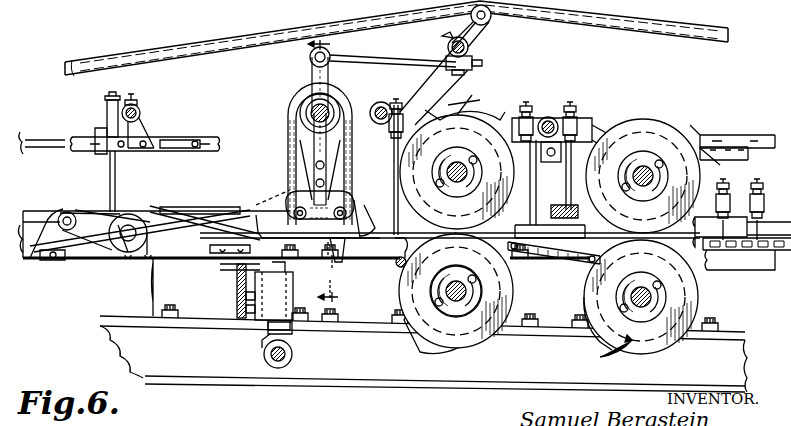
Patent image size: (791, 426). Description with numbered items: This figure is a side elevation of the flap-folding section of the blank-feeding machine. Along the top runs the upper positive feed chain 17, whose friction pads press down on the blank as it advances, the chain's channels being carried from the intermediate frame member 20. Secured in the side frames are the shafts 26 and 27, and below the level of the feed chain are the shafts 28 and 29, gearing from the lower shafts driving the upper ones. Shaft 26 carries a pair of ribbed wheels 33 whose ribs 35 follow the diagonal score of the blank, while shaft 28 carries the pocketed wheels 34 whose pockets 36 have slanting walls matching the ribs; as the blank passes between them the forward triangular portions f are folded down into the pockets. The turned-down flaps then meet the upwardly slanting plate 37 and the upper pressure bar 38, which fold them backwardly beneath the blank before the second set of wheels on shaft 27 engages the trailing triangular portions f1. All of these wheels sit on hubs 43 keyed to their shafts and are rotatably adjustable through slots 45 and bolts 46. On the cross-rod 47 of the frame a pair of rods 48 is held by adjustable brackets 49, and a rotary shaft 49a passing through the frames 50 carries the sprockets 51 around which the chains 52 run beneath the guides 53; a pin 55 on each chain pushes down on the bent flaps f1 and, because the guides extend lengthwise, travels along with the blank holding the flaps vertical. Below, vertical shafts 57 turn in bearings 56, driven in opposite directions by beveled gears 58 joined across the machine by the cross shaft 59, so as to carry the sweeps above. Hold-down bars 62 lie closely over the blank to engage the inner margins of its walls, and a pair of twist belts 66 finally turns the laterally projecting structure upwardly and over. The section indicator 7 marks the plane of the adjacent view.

The chain 17 is at (730, 44).
The intermediate frame member 20 is at (180, 137).
The shaft 26 is at (645, 174).
The shaft 27 is at (459, 162).
The shaft 28 is at (693, 310).
The shaft 29 is at (453, 304).
The ribbed wheels 33 is at (690, 142).
The pocketed wheels 34 is at (685, 290).
The ribs 35 is at (588, 132).
The pockets 36 is at (624, 344).
The upwardly slanting plate 37 is at (548, 266).
The upper pressure bar 38 is at (551, 204).
The hubs 43 is at (410, 291).
The slots 45 is at (460, 146).
The bolts 46 is at (512, 121).
The cross-rod 47 is at (472, 52).
The rods 48 is at (387, 66).
The adjustable brackets 49 is at (484, 64).
The rotary shaft 49a is at (300, 112).
The frames 50 is at (300, 80).
The sprockets 51 is at (334, 110).
The chains 52 is at (288, 140).
The guides 53 is at (288, 200).
The pin 55 is at (342, 245).
The bearings 56 is at (264, 308).
The vertical shafts 57 is at (236, 278).
The beveled gears 58 is at (292, 335).
The cross shaft 59 is at (276, 370).
The hold-down bars 62 is at (180, 212).
The twist belts 66 is at (78, 212).
The section line 7 is at (315, 171).
The triangular portions f is at (538, 258).
The triangular portions f1 is at (326, 264).